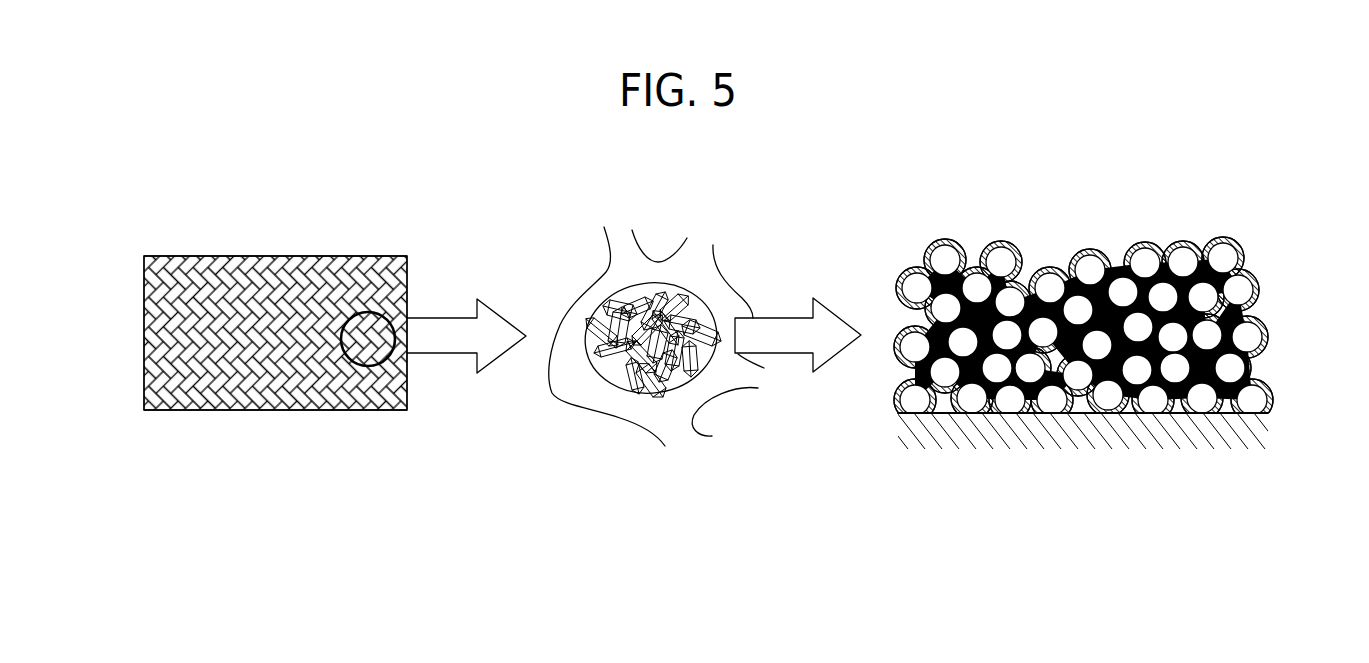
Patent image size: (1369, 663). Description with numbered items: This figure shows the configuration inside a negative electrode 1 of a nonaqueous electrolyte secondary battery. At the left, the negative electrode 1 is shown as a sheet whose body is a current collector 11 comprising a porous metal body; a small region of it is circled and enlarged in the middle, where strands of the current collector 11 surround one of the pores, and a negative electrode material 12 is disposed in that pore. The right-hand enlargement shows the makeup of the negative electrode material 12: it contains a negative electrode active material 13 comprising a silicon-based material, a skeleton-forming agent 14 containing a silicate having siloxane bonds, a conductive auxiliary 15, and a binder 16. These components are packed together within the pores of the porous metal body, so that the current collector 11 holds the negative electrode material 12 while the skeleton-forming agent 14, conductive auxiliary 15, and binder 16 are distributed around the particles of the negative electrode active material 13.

The negative electrode 1 is at (347, 188).
The current collector 11 is at (257, 254).
The negative electrode material 12 is at (607, 393).
The negative electrode active material 13 is at (1240, 291).
The skeleton-forming agent 14 is at (956, 240).
The conductive auxiliary 15 is at (1170, 242).
The binder 16 is at (1170, 242).